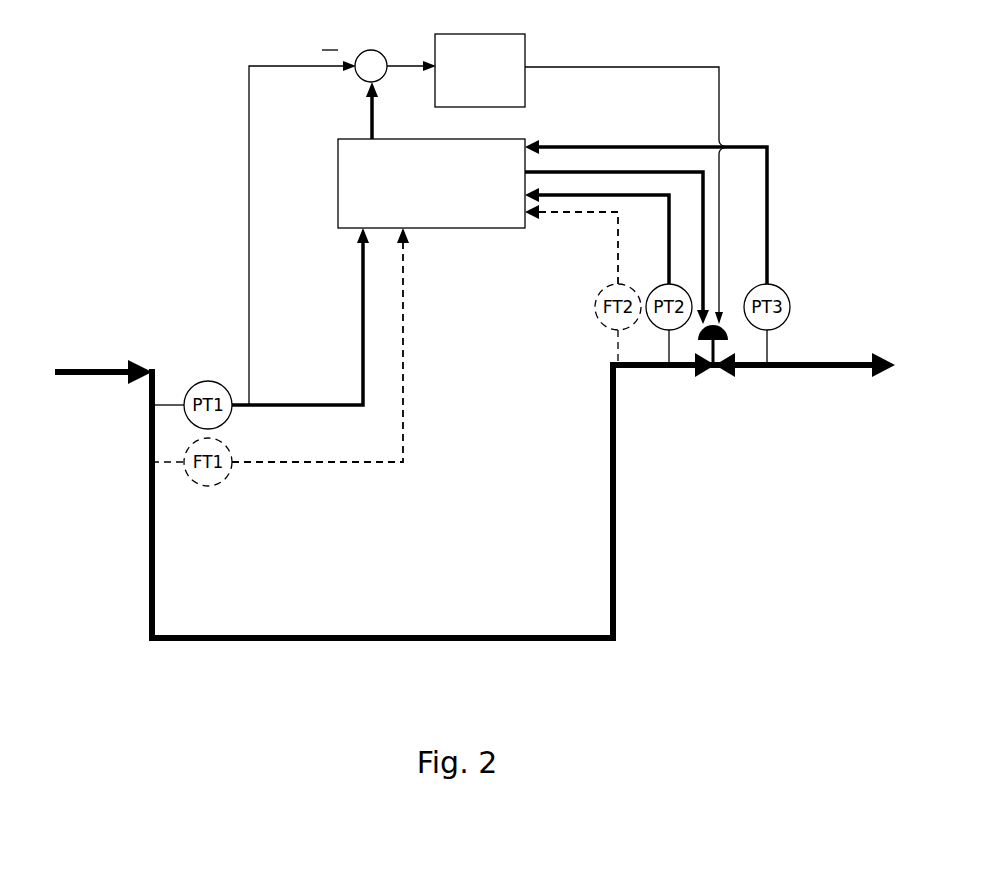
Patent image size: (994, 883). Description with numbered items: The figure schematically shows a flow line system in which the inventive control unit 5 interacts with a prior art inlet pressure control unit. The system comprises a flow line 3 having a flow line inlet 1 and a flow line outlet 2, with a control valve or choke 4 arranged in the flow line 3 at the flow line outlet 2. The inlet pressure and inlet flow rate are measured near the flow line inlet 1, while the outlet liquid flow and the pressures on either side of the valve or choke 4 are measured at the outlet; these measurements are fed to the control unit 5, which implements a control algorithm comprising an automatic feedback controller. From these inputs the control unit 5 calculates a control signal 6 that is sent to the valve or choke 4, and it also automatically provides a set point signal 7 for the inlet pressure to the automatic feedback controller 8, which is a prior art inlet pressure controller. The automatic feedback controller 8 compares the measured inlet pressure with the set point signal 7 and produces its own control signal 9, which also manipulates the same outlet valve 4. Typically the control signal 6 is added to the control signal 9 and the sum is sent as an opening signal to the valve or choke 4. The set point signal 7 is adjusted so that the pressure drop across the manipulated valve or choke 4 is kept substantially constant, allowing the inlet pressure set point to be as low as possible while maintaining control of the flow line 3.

The flow line inlet 1 is at (103, 359).
The flow line outlet 2 is at (752, 351).
The flow line 3 is at (382, 501).
The control valve or choke 4 is at (715, 366).
The control unit 5 is at (431, 183).
The control signal 6 is at (617, 248).
The set point signal 7 is at (362, 110).
The automatic feedback controller 8 is at (480, 70).
The control signal 9 is at (625, 179).